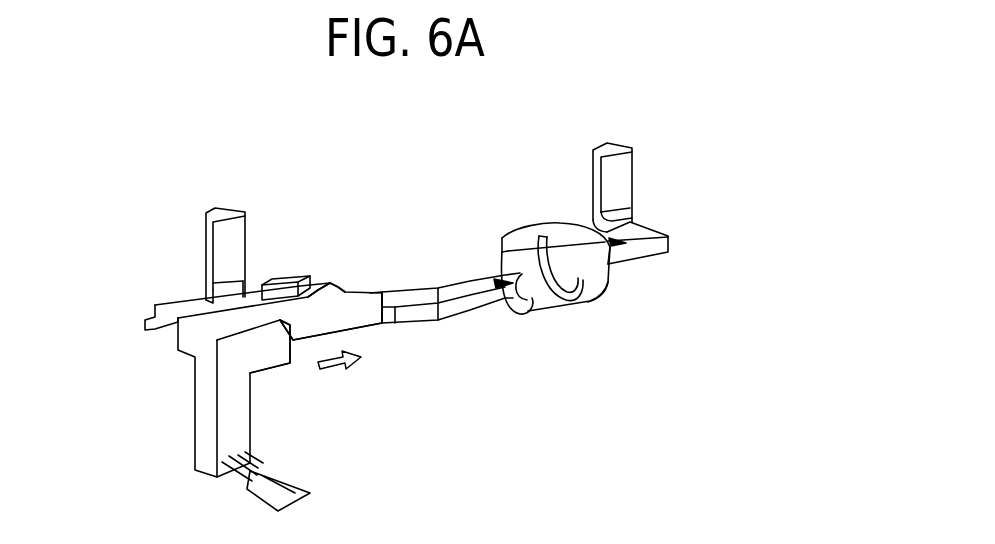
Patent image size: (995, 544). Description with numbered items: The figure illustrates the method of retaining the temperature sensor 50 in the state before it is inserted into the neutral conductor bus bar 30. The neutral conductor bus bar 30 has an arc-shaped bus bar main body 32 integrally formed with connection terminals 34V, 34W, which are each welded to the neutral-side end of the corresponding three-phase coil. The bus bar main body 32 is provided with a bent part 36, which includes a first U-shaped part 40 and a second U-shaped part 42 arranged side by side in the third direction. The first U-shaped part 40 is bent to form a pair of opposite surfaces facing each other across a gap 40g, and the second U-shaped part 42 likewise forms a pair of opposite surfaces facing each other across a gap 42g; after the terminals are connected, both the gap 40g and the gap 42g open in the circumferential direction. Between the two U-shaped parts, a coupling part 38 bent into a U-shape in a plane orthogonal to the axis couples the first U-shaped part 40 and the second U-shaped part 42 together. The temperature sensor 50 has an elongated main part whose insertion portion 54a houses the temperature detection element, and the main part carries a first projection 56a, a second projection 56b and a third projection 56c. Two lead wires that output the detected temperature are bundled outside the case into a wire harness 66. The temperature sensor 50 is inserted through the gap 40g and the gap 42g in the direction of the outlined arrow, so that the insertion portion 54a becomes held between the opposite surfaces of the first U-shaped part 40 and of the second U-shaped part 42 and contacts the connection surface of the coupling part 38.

The neutral conductor bus bar 30 is at (588, 286).
The bus bar main body 32 is at (436, 289).
The connection terminal 34V is at (213, 233).
The connection terminal 34W is at (623, 168).
The bent part 36 is at (512, 213).
The coupling part 38 is at (535, 233).
The first U-shaped part 40 is at (555, 297).
The gap 40g is at (488, 298).
The second U-shaped part 42 is at (597, 287).
The gap 42g is at (648, 246).
The temperature sensor 50 is at (265, 359).
The insertion portion 54a is at (320, 284).
The first projection 56a is at (371, 328).
The second projection 56b is at (290, 347).
The third projection 56c is at (283, 278).
The wire harness 66 is at (290, 488).